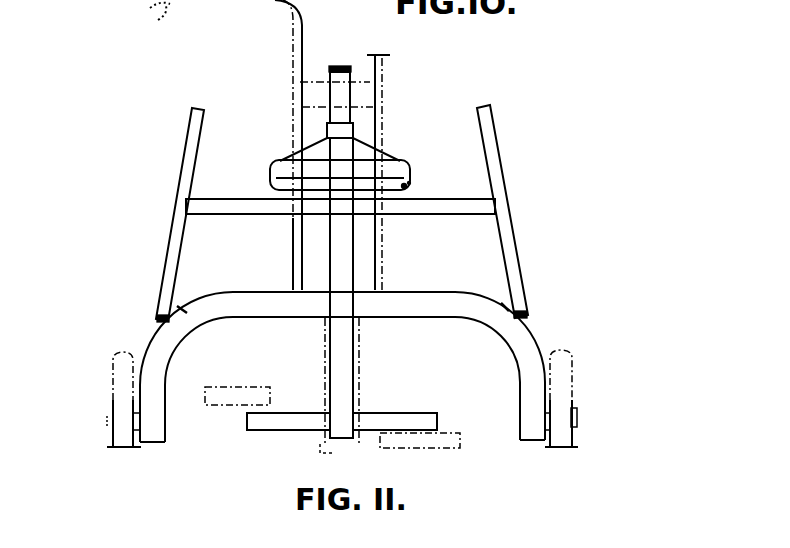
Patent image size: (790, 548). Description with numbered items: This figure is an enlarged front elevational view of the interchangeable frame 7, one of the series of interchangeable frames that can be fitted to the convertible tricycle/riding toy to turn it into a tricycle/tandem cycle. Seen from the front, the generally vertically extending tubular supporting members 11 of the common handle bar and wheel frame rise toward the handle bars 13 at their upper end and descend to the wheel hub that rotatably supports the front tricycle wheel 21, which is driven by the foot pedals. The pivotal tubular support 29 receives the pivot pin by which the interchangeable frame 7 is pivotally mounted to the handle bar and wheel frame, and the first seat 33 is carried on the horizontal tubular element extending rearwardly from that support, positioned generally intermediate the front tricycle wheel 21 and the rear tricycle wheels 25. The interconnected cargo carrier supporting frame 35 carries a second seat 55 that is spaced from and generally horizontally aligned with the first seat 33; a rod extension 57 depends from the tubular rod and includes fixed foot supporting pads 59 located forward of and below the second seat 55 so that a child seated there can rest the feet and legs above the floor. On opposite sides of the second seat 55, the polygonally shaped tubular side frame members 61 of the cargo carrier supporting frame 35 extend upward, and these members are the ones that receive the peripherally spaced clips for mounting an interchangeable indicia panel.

In FIG. 11, the interchangeable frame 7 is at (558, 158).
In FIG. 11, the vertically extending tubular supporting members 11 is at (293, 222).
In FIG. 10, the handle bars 13 is at (176, 17).
In FIG. 11, the front tricycle wheel 21 is at (358, 338).
In FIG. 11, the rear tricycle wheels 25 is at (131, 447).
In FIG. 11, the pivotal tubular support 29 is at (351, 100).
In FIG. 11, the seat 33 is at (391, 160).
In FIG. 11, the interconnected cargo carrier supporting frame 35 is at (254, 180).
In FIG. 11, the second seat 55 is at (409, 185).
In FIG. 11, the rod extension 57 is at (343, 339).
In FIG. 11, the foot supporting pads 59 is at (246, 428).
In FIG. 11, the tubular side frame members 61 is at (172, 242).